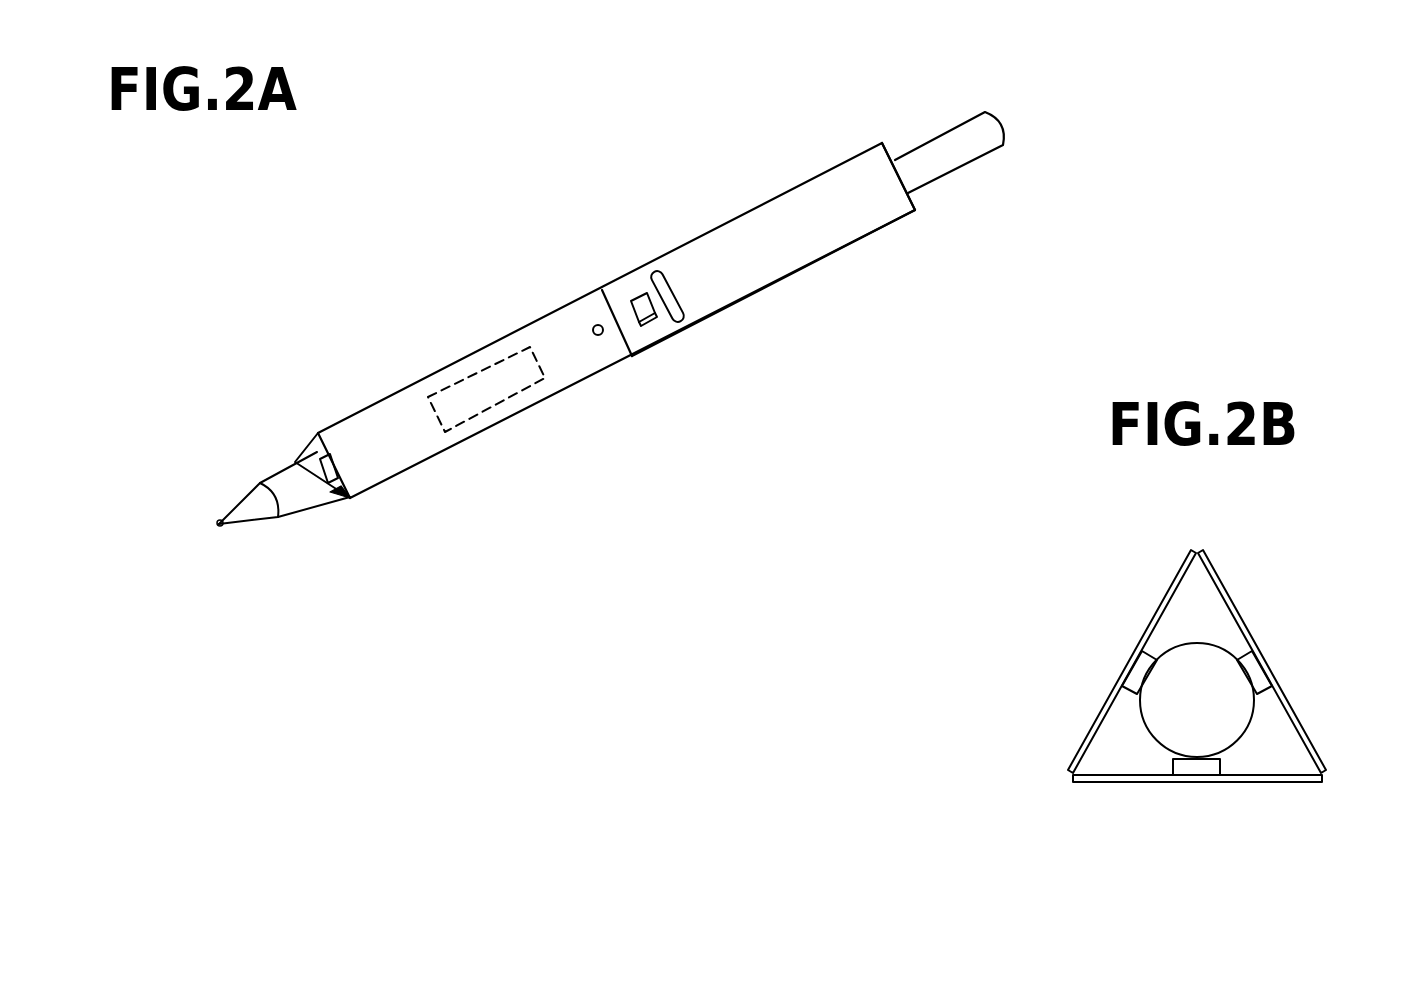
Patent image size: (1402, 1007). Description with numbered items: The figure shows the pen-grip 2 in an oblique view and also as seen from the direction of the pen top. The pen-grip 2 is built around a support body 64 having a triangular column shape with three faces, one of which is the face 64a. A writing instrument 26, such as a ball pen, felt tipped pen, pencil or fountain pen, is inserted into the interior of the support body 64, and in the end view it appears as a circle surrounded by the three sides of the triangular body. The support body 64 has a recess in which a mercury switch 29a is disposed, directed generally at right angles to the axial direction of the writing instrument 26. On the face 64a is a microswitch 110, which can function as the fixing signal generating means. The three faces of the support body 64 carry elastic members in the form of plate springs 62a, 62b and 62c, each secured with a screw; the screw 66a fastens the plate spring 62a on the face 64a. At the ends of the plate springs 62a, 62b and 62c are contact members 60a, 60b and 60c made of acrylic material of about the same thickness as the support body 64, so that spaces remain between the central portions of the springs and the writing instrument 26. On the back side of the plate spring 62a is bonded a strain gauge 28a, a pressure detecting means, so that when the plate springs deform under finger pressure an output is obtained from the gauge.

In FIG. 2A, the pen-grip 2 is at (672, 162).
In FIG. 2A, the writing instrument 26 is at (967, 147).
In FIG. 2B, the writing instrument 26 is at (1168, 723).
In FIG. 2A, the strain gauge 28a is at (513, 380).
In FIG. 2A, the mercury switch 29a is at (678, 292).
In FIG. 2A, the contact member 60a is at (323, 482).
In FIG. 2B, the contact member 60a is at (1260, 665).
In FIG. 2B, the contact member 60b is at (1135, 668).
In FIG. 2B, the contact member 60c is at (1202, 765).
In FIG. 2A, the plate spring 62a is at (593, 362).
In FIG. 2B, the plate spring 62a is at (1232, 592).
In FIG. 2B, the plate spring 62b is at (1167, 593).
In FIG. 2B, the plate spring 62c is at (1128, 783).
In FIG. 2A, the support body 64 is at (873, 235).
In FIG. 2A, the face 64a is at (657, 330).
In FIG. 2A, the screw 66a is at (596, 327).
In FIG. 2A, the microswitch 110 is at (638, 298).